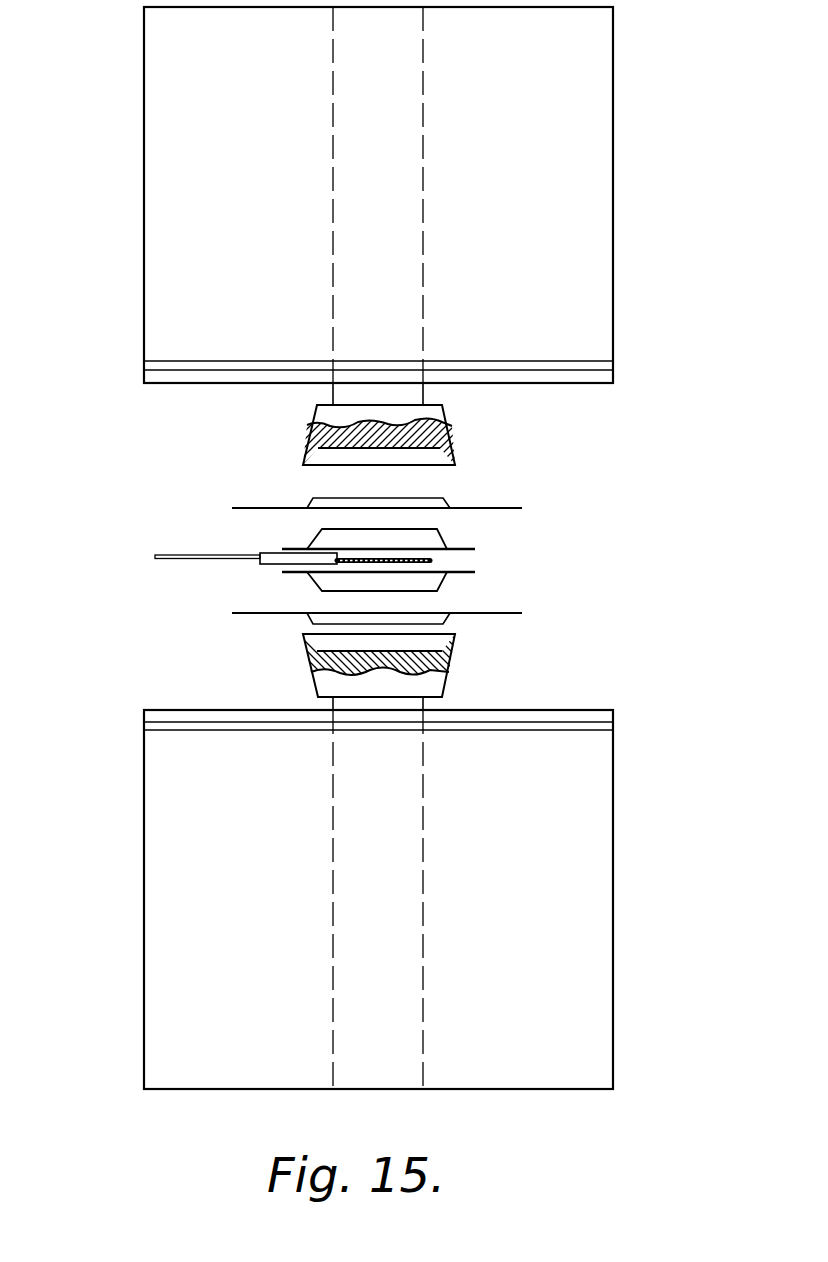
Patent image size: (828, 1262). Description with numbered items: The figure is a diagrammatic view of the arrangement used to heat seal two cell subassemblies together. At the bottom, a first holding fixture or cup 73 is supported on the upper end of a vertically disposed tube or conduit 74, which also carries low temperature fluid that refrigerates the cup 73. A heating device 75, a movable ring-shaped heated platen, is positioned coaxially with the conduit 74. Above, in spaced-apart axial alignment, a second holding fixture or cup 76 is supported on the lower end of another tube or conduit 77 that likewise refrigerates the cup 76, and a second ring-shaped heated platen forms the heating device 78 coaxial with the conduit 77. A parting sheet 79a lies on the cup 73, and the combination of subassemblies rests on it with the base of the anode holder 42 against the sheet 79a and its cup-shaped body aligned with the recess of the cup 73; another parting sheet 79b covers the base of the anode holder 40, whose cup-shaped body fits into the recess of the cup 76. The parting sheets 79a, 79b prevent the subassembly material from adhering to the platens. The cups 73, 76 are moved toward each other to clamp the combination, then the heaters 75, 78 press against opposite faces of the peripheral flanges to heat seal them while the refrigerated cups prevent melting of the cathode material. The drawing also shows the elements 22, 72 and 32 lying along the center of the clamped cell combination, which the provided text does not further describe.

The heating device 78 is at (146, 122).
The tube or conduit 77 is at (417, 395).
The second holding fixture or cup 76 is at (312, 437).
The parting sheet 79b is at (488, 508).
The anode holder 40 is at (445, 536).
The anode holder 42 is at (447, 583).
The wire 22 is at (172, 556).
The sleeve 72 is at (270, 563).
The contact element 32 is at (432, 560).
The parting sheet 79a is at (503, 617).
The first holding fixture or cup 73 is at (317, 660).
The tube or conduit 74 is at (428, 706).
The heating device 75 is at (613, 948).